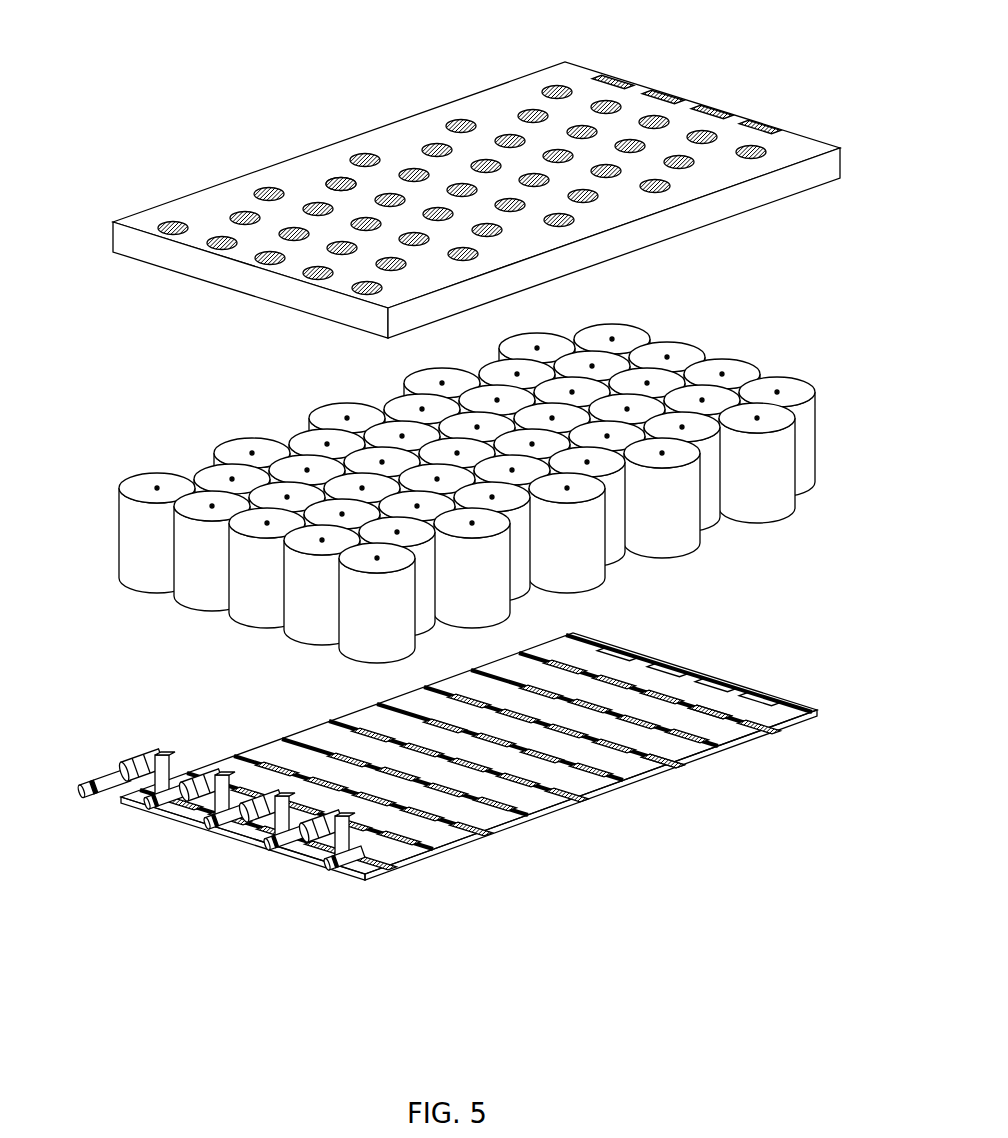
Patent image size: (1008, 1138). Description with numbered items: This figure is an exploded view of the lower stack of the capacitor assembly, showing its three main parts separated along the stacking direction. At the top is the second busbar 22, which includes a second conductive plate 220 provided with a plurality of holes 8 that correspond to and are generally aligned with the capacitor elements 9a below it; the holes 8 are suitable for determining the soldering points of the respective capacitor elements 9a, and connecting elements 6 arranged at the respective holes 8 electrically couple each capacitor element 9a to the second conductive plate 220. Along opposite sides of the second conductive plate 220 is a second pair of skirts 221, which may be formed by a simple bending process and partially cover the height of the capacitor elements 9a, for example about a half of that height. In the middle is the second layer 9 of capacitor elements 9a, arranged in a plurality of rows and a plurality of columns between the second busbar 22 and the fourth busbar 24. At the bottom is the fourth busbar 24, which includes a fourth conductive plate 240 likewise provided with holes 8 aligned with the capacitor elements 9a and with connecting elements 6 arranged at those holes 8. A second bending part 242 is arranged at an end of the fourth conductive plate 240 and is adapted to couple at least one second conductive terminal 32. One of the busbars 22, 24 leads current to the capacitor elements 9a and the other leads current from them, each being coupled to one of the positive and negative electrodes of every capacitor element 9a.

The second busbar 22 is at (493, 186).
The second conductive plate 220 is at (232, 200).
The second pair of skirts 221 is at (118, 245).
The connecting elements 6 is at (430, 147).
The holes 8 is at (345, 178).
The second layer 9 is at (501, 489).
The capacitor elements 9a is at (795, 388).
The fourth busbar 24 is at (423, 818).
The fourth conductive plate 240 is at (445, 838).
The second bending part 242 is at (262, 826).
The second conductive terminal 32 is at (97, 773).